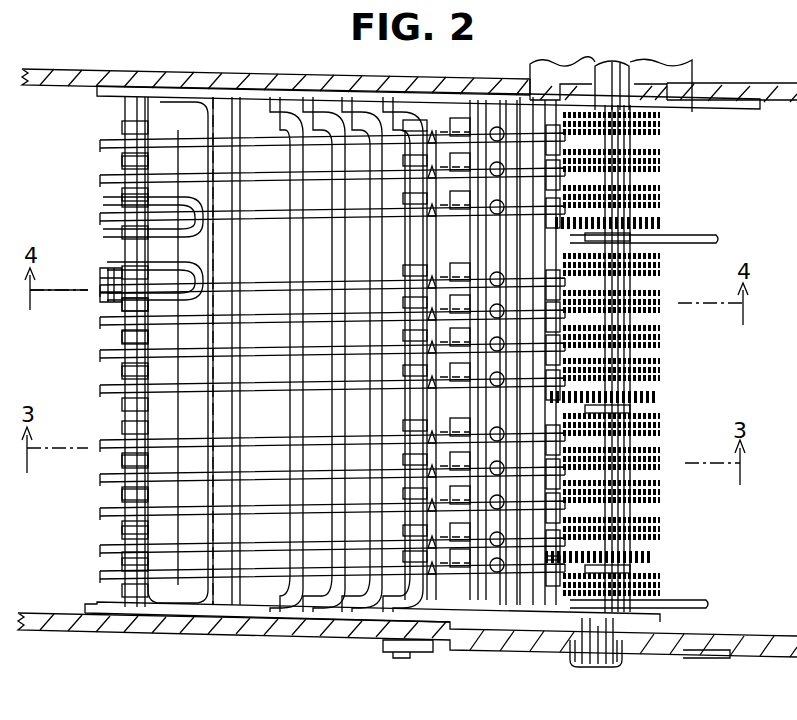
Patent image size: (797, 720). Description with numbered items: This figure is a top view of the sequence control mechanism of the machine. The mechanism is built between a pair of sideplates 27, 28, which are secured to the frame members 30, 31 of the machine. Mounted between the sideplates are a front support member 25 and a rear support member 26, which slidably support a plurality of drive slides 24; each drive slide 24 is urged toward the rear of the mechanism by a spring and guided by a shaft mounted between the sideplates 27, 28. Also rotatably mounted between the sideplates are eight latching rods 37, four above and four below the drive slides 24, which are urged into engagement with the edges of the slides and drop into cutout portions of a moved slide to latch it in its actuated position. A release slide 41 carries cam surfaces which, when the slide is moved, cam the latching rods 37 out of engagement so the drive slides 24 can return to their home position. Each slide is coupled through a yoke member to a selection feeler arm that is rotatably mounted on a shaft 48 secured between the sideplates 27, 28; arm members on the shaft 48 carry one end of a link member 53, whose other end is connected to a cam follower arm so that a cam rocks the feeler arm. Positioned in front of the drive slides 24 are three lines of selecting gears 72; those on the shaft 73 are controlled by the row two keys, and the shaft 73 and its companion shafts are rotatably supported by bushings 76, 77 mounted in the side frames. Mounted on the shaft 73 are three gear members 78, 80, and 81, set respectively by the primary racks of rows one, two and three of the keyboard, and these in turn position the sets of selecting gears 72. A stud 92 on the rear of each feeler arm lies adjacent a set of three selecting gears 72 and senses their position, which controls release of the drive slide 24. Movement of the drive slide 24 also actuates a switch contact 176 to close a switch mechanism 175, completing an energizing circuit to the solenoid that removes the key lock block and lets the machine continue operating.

The frame member 30 is at (84, 77).
The sideplate 27 is at (105, 92).
The front support member 25 is at (226, 112).
The latching rod 37 is at (283, 118).
The shaft 48 is at (458, 118).
The rear support member 26 is at (538, 80).
The stud 92 is at (560, 110).
The bushing 76 is at (632, 90).
The gear member 81 is at (657, 219).
The link member 53 is at (708, 240).
The switch contact 176 is at (108, 276).
The switch mechanism 175 is at (110, 298).
The release slide 41 is at (104, 440).
The gear member 80 is at (650, 396).
The drive slide 24 is at (95, 513).
The selecting gear 72 is at (650, 506).
The gear member 78 is at (645, 557).
The sideplate 28 is at (93, 606).
The frame member 31 is at (95, 632).
The bushing 77 is at (572, 656).
The shaft 73 is at (597, 652).